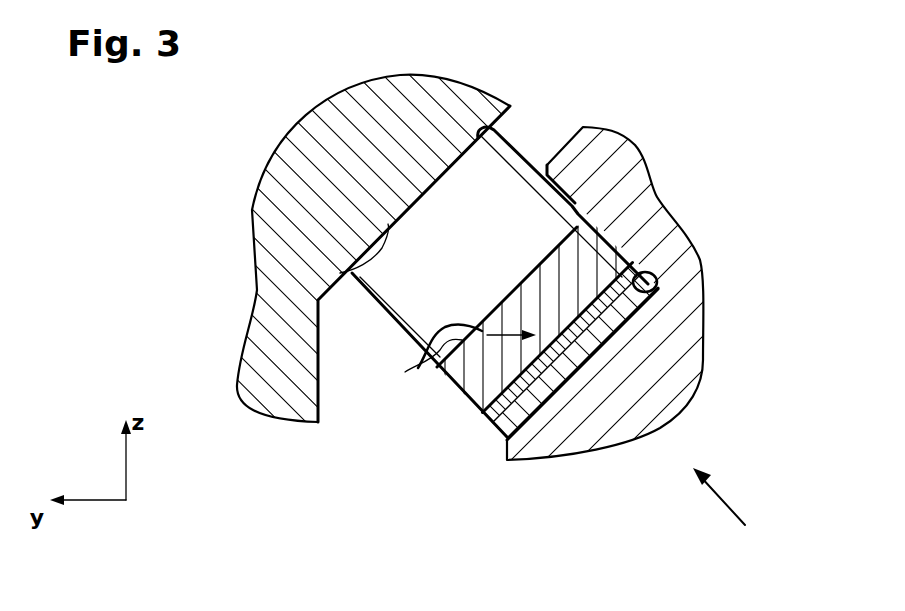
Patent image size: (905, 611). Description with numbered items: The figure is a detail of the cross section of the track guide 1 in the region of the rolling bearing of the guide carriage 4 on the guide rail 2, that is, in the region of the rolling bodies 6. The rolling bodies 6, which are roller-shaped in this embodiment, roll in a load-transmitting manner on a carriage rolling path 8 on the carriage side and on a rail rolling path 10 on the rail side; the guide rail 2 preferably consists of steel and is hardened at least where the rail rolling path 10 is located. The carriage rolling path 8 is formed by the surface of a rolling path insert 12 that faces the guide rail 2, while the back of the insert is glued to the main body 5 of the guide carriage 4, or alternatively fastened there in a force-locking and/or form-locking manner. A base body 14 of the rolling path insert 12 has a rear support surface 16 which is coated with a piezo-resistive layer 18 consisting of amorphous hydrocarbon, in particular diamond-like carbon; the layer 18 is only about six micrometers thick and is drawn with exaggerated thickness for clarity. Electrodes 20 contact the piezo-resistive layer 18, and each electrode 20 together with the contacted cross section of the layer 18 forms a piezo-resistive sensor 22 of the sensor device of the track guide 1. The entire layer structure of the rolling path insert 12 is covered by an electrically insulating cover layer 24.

The track guide 1 is at (758, 105).
The guide rail 2 is at (262, 343).
The guide carriage 4 is at (569, 292).
The main body 5 is at (672, 395).
The rolling bodies 6 is at (493, 176).
The carriage rolling path 8 is at (430, 340).
The rail rolling path 10 is at (388, 224).
The rolling path insert 12 is at (598, 208).
The base body 14 is at (605, 283).
The rear support surface 16 is at (660, 290).
The piezo-resistive layer 18 is at (487, 415).
The electrodes 20 is at (568, 345).
The piezo-resistive sensor 22 is at (492, 335).
The electrically insulating cover layer 24 is at (522, 408).